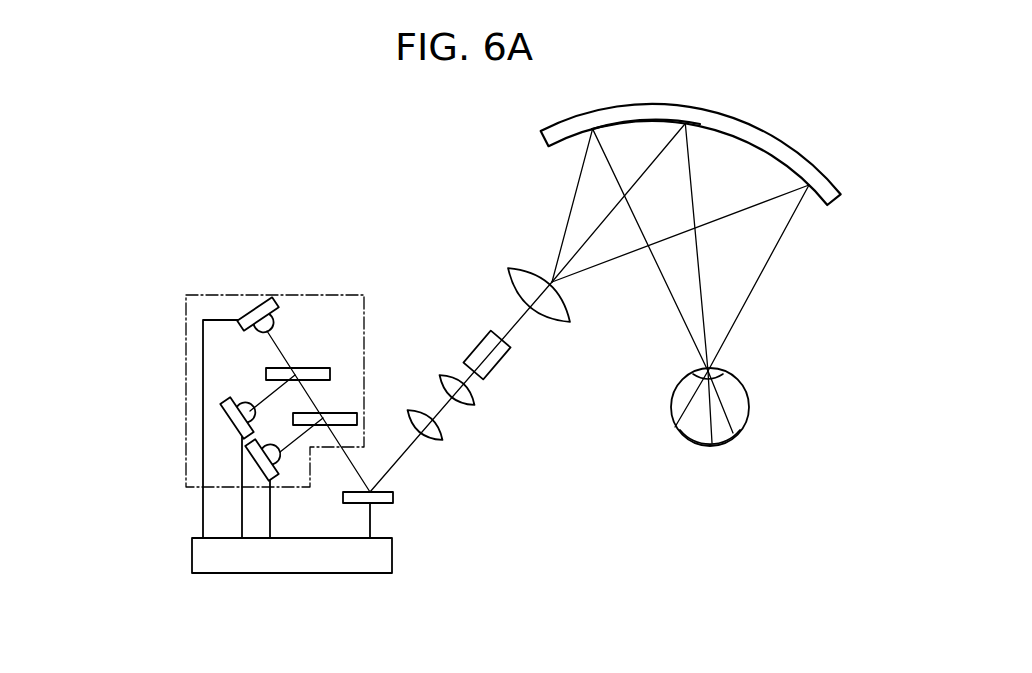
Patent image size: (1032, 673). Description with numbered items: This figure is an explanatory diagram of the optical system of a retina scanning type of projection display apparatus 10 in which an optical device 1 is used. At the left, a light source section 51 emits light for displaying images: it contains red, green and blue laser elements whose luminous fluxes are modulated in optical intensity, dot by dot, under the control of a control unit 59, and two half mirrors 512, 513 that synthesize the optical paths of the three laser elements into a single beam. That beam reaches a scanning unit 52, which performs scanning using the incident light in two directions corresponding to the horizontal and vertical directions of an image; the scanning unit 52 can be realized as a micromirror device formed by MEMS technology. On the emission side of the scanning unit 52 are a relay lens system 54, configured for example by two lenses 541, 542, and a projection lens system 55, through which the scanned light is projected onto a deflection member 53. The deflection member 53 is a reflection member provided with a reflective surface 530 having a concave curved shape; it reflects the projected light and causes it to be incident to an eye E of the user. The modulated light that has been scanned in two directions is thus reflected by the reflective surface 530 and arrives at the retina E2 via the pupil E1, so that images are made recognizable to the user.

The image display device 10 is at (316, 165).
The light source section 51 is at (186, 335).
The half mirror 512 is at (302, 366).
The half mirror 513 is at (342, 412).
The scanning unit 52 is at (393, 495).
The control unit 59 is at (282, 563).
The relay lens system 54 is at (450, 384).
The lens 541 is at (416, 410).
The lens 542 is at (444, 353).
The optical device 1 is at (474, 330).
The projection lens system 55 is at (564, 315).
The deflection member 53 is at (751, 123).
The reflective surface 530 is at (640, 122).
The eye E is at (749, 408).
The pupil E1 is at (724, 373).
The retina E2 is at (728, 440).